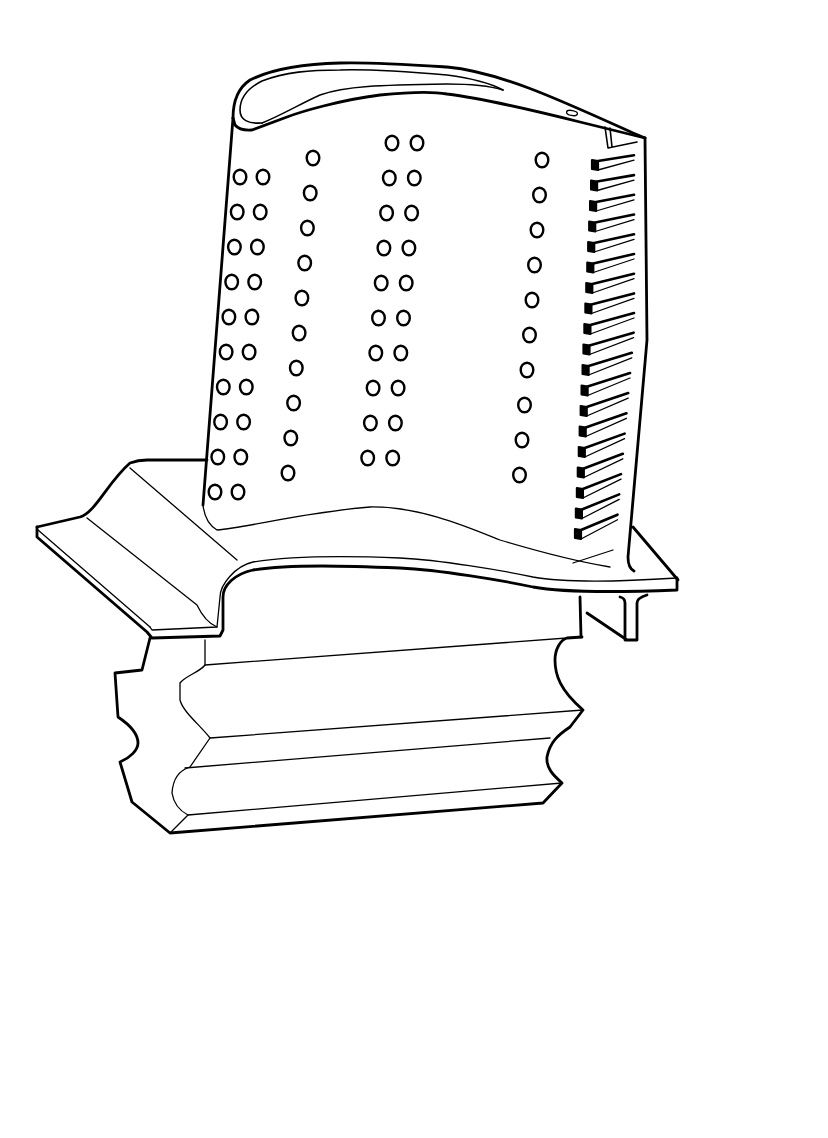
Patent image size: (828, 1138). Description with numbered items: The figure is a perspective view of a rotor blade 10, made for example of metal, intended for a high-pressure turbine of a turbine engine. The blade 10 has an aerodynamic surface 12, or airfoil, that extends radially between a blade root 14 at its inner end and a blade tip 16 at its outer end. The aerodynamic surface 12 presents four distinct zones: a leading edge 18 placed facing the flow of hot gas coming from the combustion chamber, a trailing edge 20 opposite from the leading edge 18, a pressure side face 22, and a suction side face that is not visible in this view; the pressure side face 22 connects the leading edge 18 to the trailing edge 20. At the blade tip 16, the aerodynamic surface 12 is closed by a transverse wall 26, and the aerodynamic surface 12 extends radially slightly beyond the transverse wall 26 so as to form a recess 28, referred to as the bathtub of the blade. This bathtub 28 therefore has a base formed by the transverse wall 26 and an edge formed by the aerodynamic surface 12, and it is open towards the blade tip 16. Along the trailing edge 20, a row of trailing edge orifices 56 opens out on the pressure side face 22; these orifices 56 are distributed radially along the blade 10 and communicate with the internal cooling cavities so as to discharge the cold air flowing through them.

The rotor blade 10 is at (170, 70).
The aerodynamic surface 12 is at (214, 157).
The blade root 14 is at (124, 496).
The blade tip 16 is at (513, 84).
The leading edge 18 is at (216, 332).
The trailing edge 20 is at (647, 360).
The pressure side face 22 is at (473, 437).
The transverse wall 26 is at (280, 103).
The recess (bathtub) 28 is at (322, 84).
The trailing edge orifices 56 is at (625, 187).